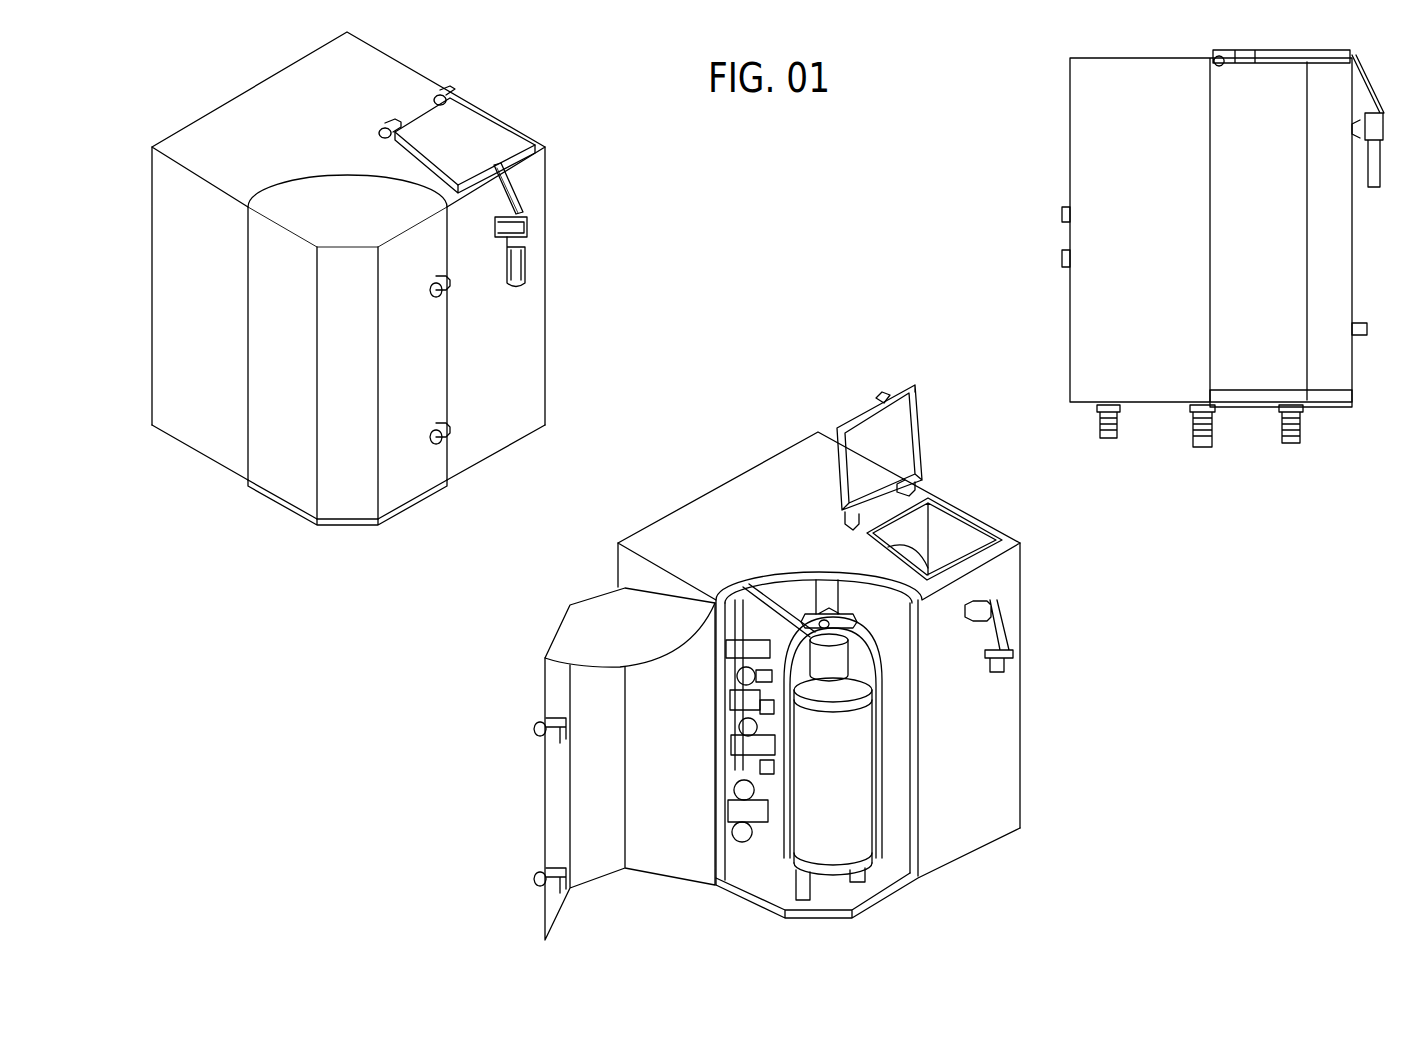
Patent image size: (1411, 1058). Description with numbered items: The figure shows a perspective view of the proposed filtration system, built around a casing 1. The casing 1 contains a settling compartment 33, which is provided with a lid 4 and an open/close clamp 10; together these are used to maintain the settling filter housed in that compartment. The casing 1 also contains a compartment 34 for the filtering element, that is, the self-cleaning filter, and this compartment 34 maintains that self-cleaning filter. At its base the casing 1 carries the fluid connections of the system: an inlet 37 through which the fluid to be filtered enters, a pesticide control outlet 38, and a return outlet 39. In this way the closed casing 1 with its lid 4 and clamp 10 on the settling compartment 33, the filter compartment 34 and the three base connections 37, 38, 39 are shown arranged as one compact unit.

The casing 1 is at (235, 142).
The lid 4 is at (458, 130).
The open/close clamp 10 is at (533, 248).
The settling compartment 33 is at (943, 543).
The compartment of the filtering element 34 is at (887, 745).
The inlet for the fluid to be filtered 37 is at (1108, 446).
The pesticide control outlet 38 is at (1202, 451).
The return outlet 39 is at (1290, 449).